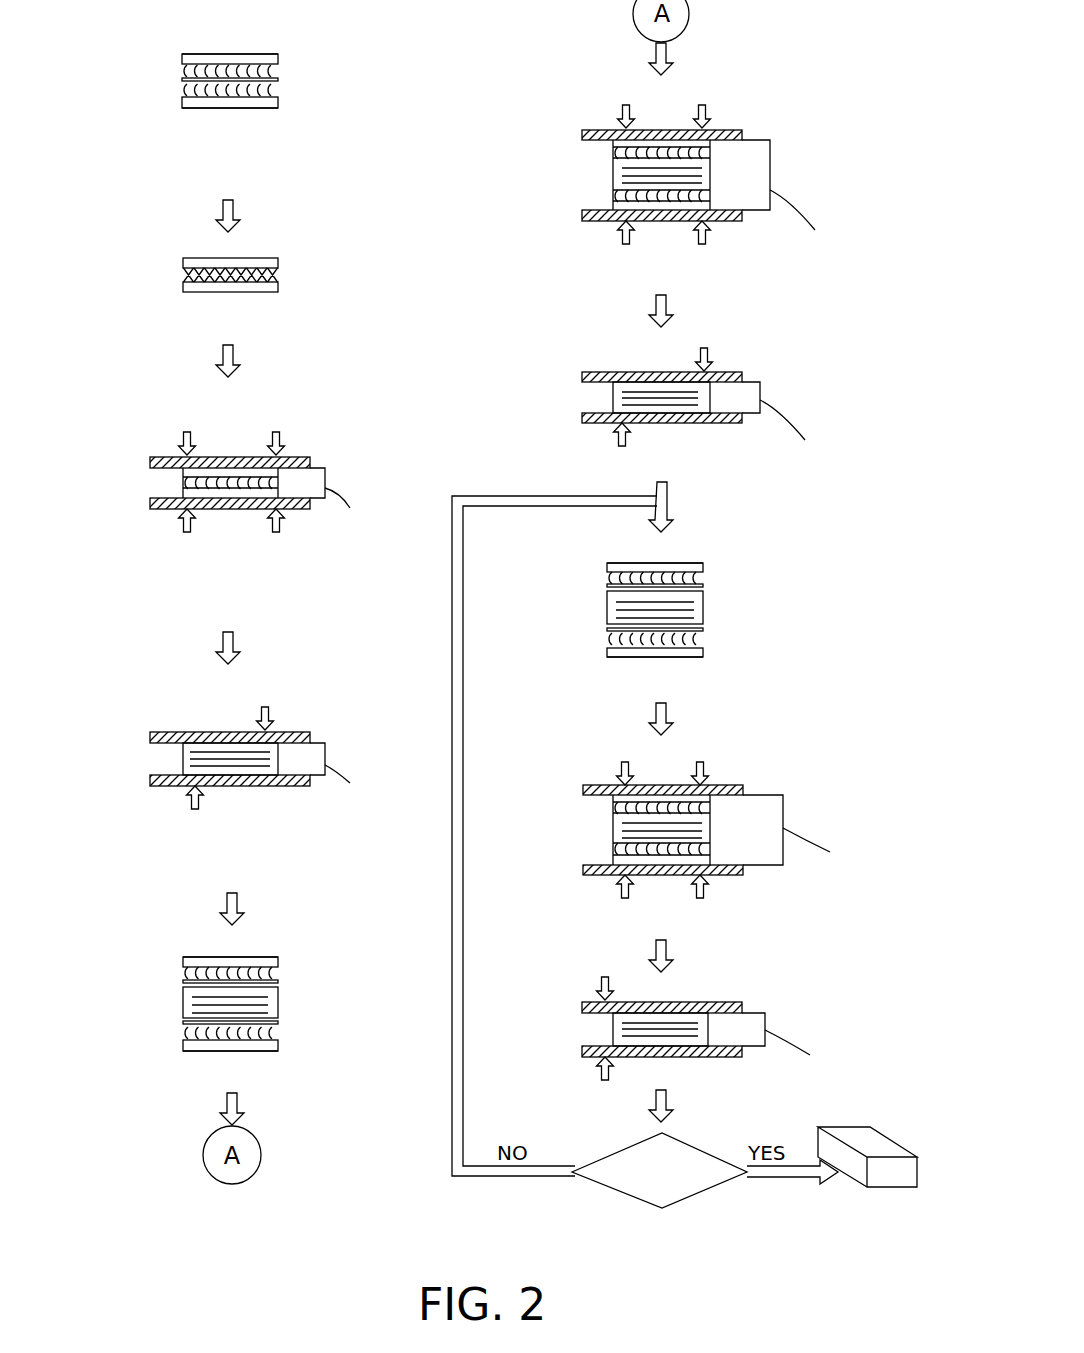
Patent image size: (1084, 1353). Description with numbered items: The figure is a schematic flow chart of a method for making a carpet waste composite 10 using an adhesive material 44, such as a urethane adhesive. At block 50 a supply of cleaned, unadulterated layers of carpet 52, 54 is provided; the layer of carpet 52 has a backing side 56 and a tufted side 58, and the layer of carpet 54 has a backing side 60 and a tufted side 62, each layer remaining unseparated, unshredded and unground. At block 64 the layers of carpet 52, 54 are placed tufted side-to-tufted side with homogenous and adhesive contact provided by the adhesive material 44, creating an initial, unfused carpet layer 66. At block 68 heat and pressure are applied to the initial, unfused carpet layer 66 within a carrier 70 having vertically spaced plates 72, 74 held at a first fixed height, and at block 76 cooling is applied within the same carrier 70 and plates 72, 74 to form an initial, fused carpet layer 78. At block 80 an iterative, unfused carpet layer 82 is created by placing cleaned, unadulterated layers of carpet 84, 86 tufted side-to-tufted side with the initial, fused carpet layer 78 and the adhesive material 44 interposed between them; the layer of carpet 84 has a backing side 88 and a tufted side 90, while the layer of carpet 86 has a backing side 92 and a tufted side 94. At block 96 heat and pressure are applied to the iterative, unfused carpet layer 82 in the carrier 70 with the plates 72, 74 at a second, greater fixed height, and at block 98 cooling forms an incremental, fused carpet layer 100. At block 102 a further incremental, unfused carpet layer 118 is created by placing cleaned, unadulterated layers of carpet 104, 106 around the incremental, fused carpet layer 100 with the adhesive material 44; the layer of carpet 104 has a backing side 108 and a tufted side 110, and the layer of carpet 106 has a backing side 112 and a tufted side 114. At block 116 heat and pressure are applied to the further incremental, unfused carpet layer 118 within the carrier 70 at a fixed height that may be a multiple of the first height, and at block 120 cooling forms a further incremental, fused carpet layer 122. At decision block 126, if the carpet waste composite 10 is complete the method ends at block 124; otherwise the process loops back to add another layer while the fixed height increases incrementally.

The carpet waste composite 10 is at (895, 1150).
The adhesive material 44 is at (182, 81).
The supply block 50 is at (228, 79).
The cleaned, unadulterated layer of carpet 52 is at (182, 97).
The cleaned, unadulterated layer of carpet 54 is at (182, 62).
The backing side 56 is at (215, 108).
The tufted side 58 is at (276, 88).
The backing side 60 is at (230, 54).
The tufted side 62 is at (182, 77).
The positioning block 64 is at (290, 272).
The initial, unfused carpet layer 66 is at (253, 258).
The heat and pressure block 68 is at (348, 483).
The carrier 70 is at (444, 579).
The vertically spaced plate 72 is at (152, 461).
The vertically spaced plate 74 is at (152, 503).
The cooling block 76 is at (347, 758).
The initial, fused carpet layer 78 is at (278, 758).
The iterative layer block 80 is at (267, 993).
The iterative, unfused carpet layer 82 is at (282, 1000).
The cleaned, unadulterated layer of carpet 84 is at (183, 1044).
The cleaned, unadulterated layer of carpet 86 is at (183, 962).
The backing side 88 is at (255, 1052).
The tufted side 90 is at (278, 1032).
The backing side 92 is at (255, 957).
The tufted side 94 is at (278, 973).
The heat and pressure block 96 is at (797, 170).
The cooling block 98 is at (793, 400).
The incremental, fused carpet layer 100 is at (613, 398).
The further incremental layer block 102 is at (706, 614).
The cleaned, unadulterated layer of carpet 104 is at (607, 650).
The cleaned, unadulterated layer of carpet 106 is at (607, 567).
The backing side 108 is at (690, 657).
The tufted side 110 is at (703, 637).
The backing side 112 is at (695, 563).
The tufted side 114 is at (703, 580).
The heat and pressure block 116 is at (812, 815).
The further incremental, unfused carpet layer 118 is at (613, 828).
The cooling block 120 is at (812, 1028).
The further incremental, fused carpet layer 122 is at (613, 1028).
The end block 124 is at (710, 1152).
The decision block 126 is at (878, 1112).